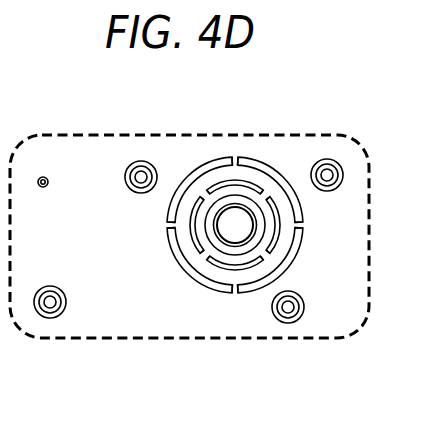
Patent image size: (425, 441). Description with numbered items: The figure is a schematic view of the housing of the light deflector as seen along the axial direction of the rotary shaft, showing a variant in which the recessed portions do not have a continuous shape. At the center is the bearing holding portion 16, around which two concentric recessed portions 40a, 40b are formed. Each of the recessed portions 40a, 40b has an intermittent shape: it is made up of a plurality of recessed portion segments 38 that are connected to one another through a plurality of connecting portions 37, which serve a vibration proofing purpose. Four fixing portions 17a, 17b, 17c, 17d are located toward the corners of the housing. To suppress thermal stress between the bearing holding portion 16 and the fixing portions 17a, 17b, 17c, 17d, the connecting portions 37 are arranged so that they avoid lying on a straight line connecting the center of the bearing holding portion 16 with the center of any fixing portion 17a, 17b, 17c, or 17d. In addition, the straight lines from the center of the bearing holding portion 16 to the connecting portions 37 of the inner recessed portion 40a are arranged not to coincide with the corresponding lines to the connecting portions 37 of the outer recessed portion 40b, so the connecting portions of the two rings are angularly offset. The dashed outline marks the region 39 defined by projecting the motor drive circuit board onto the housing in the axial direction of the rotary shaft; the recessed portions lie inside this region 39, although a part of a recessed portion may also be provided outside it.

The bearing holding portion 16 is at (231, 246).
The fixing portion 17a is at (327, 160).
The fixing portion 17b is at (128, 164).
The fixing portion 17c is at (303, 316).
The fixing portion 17d is at (50, 318).
The connecting portion 37 is at (205, 195).
The recessed portion segment 38 is at (271, 157).
The region 39 is at (322, 339).
The recessed portion 40a is at (265, 262).
The recessed portion 40b is at (293, 259).